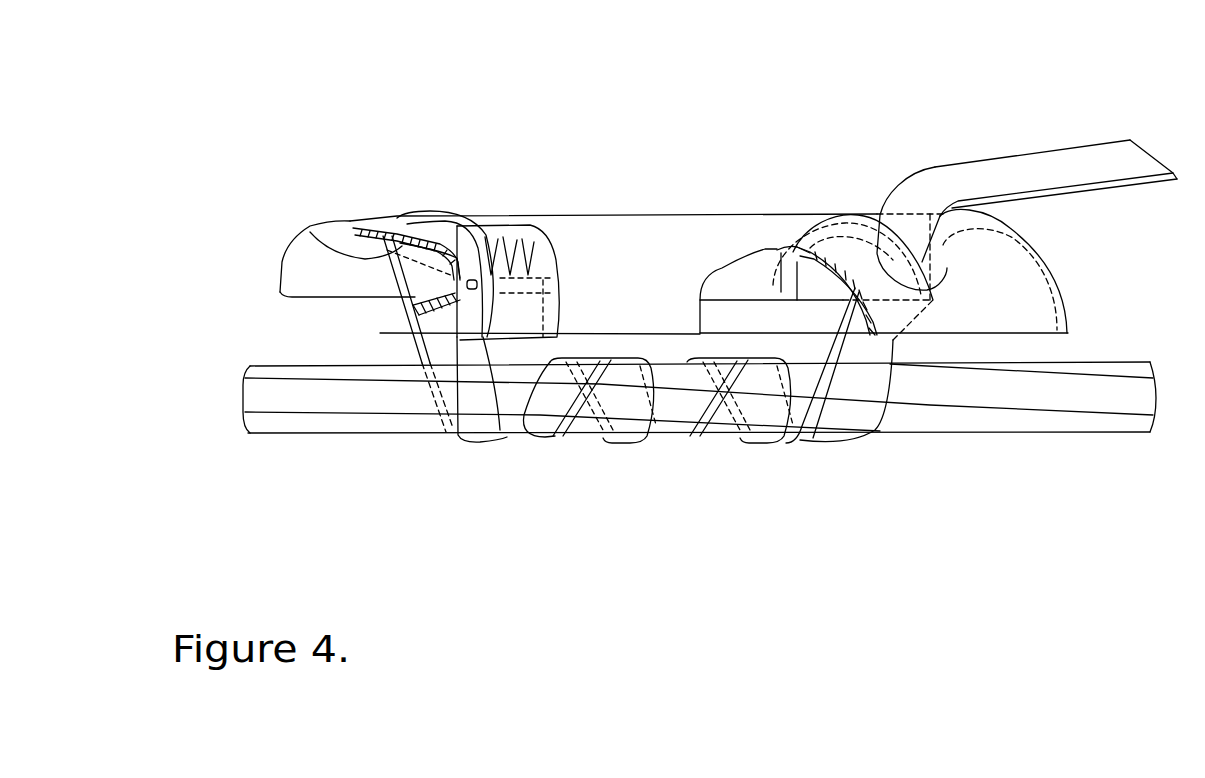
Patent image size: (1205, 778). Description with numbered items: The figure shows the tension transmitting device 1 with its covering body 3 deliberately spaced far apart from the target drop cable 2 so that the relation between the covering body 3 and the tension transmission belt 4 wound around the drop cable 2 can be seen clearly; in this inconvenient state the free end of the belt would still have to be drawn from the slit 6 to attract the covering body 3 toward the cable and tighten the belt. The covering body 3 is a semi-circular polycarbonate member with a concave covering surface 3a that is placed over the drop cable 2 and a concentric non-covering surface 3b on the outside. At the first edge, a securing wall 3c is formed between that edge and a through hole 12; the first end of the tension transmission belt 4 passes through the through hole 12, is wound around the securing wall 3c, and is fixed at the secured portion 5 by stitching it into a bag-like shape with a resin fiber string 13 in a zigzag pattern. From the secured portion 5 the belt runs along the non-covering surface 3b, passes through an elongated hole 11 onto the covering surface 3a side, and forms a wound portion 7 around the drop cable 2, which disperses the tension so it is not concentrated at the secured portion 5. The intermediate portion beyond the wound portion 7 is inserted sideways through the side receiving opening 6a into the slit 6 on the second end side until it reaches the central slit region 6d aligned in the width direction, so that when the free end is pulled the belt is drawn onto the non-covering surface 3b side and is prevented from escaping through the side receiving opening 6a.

The tension transmitting device 1 is at (777, 137).
The drop cable 2 is at (344, 437).
The covering body 3 is at (632, 326).
The covering surface 3a is at (583, 223).
The non-covering surface 3b is at (743, 284).
The securing wall 3c is at (452, 443).
The tension transmission belt 4 is at (1060, 148).
The secured portion 5 is at (516, 363).
The slit 6 is at (929, 252).
The side receiving opening 6a is at (779, 300).
The central slit region 6d is at (915, 289).
The wound portion 7 is at (810, 457).
The elongated hole 11 is at (350, 256).
The through hole 12 is at (430, 333).
The string 13 is at (560, 263).